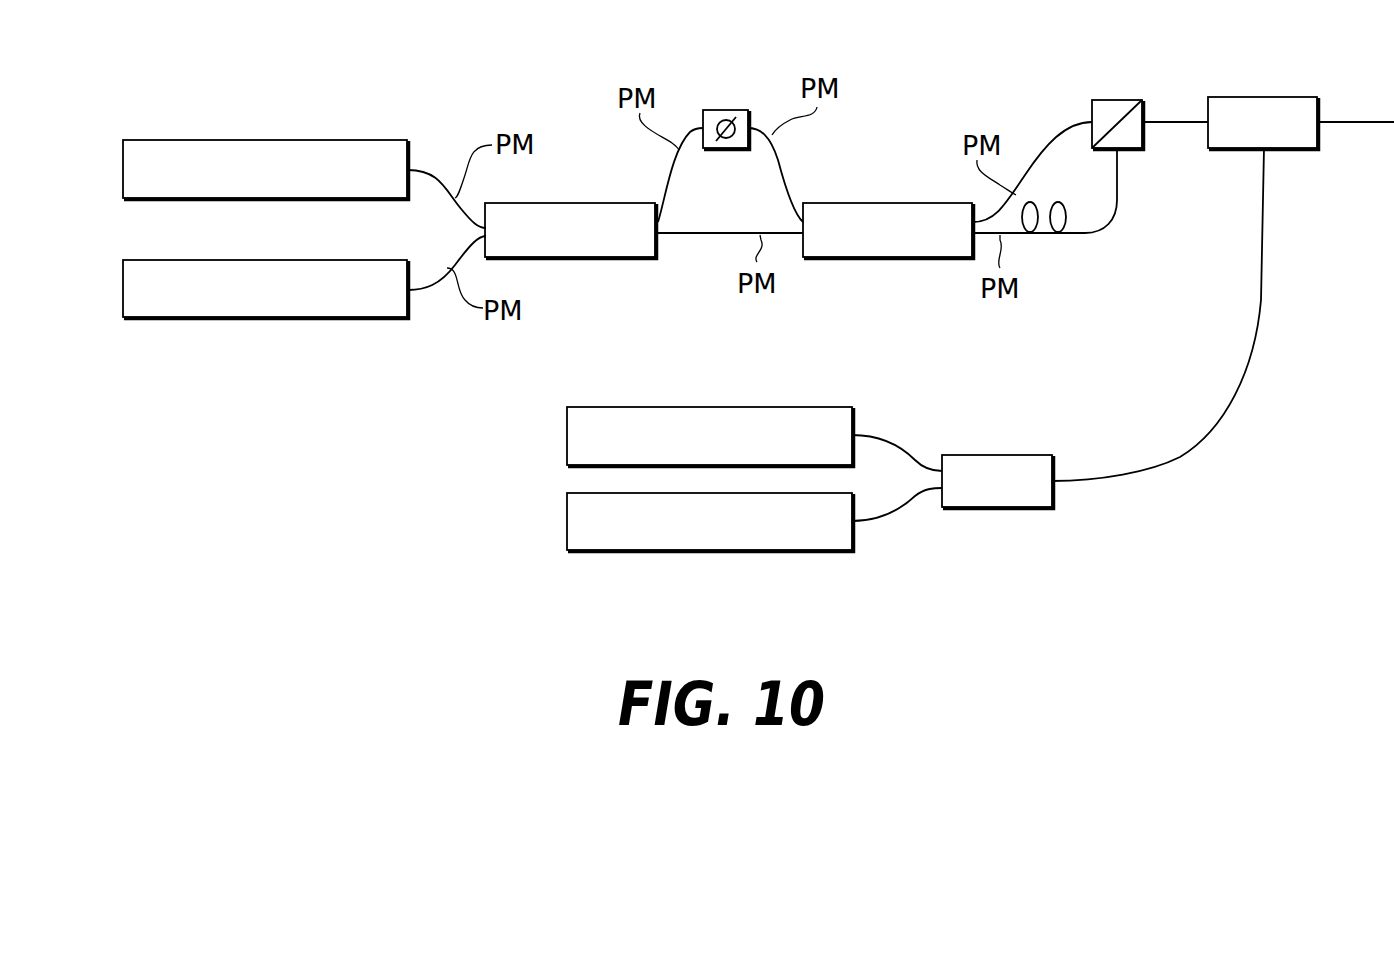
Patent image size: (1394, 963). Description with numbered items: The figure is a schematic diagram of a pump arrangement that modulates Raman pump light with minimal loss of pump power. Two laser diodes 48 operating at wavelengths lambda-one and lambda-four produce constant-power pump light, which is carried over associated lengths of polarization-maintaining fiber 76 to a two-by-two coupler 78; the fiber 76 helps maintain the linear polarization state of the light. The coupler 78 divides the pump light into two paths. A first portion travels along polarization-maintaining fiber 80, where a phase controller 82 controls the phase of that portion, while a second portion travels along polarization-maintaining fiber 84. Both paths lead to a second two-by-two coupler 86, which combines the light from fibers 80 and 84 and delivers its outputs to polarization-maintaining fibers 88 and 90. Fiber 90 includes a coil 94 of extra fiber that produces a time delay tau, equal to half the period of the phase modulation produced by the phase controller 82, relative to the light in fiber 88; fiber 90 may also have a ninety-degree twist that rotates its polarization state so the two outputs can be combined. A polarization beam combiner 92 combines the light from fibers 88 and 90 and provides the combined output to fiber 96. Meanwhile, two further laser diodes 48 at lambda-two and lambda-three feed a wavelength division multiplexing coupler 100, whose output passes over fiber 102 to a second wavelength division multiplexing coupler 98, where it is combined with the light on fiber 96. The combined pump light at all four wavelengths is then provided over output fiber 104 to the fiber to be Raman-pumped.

The laser diodes 48 is at (325, 140).
The polarization-maintaining fiber 76 is at (420, 170).
The 2×2 coupler 78 is at (575, 203).
The polarization-maintaining fiber 80 is at (786, 195).
The phase controller 82 is at (728, 110).
The polarization-maintaining fiber 84 is at (703, 235).
The 2×2 coupler 86 is at (885, 260).
The polarization-maintaining fiber 88 is at (1050, 150).
The polarization-maintaining fiber 90 is at (1072, 205).
The polarization beam combiner 92 is at (1117, 100).
The coil 94 is at (1050, 195).
The fiber 96 is at (1172, 124).
The wavelength division multiplexing coupler 98 is at (1260, 97).
The wavelength division multiplexing coupler 100 is at (1027, 440).
The fiber 102 is at (1261, 313).
The output fiber 104 is at (1372, 123).